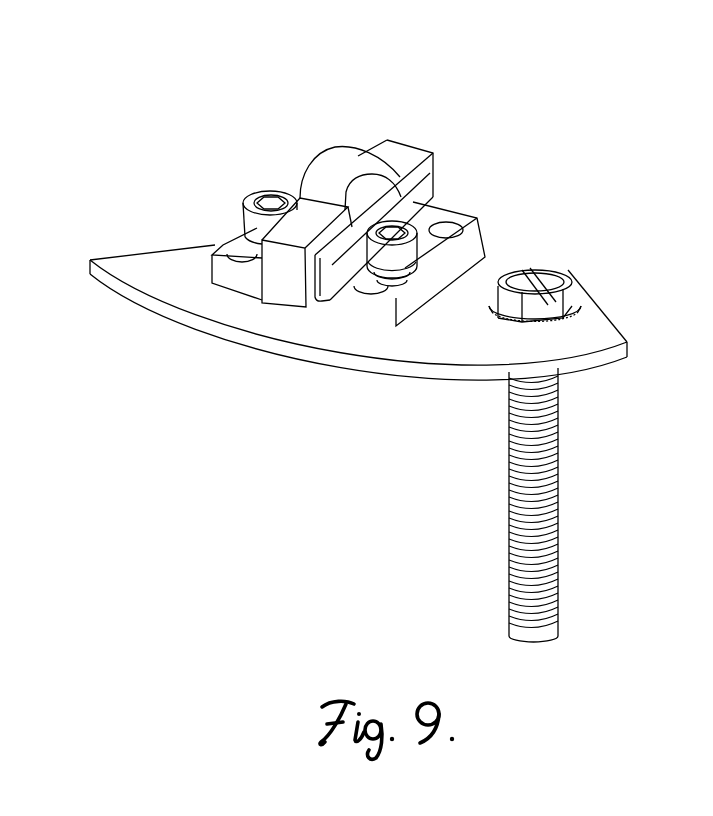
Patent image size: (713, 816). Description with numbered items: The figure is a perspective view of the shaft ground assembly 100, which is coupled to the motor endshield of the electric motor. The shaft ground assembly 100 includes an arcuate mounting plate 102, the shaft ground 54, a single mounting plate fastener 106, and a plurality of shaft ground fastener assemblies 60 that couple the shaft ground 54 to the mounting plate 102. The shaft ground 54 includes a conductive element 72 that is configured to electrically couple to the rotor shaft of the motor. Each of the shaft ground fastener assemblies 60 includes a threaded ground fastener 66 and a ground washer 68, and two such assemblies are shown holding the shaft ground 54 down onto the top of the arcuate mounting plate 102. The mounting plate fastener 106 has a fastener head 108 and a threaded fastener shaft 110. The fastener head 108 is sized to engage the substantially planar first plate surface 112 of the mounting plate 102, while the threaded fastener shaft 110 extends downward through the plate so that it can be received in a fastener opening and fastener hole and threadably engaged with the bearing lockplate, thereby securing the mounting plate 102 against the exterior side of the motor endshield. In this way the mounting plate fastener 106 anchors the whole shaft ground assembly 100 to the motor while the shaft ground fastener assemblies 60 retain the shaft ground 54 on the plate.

The shaft ground assembly 100 is at (538, 88).
The arcuate mounting plate 102 is at (600, 296).
The first plate surface 112 is at (127, 268).
The threaded fastener shaft 110 is at (548, 456).
The fastener head 108 is at (582, 318).
The mounting plate fastener 106 is at (570, 268).
The ground washer 68 is at (248, 243).
The shaft ground 54 is at (281, 306).
The conductive element 72 is at (428, 194).
The shaft ground fastener assembly 60 is at (252, 188).
The threaded ground fastener 66 is at (273, 195).